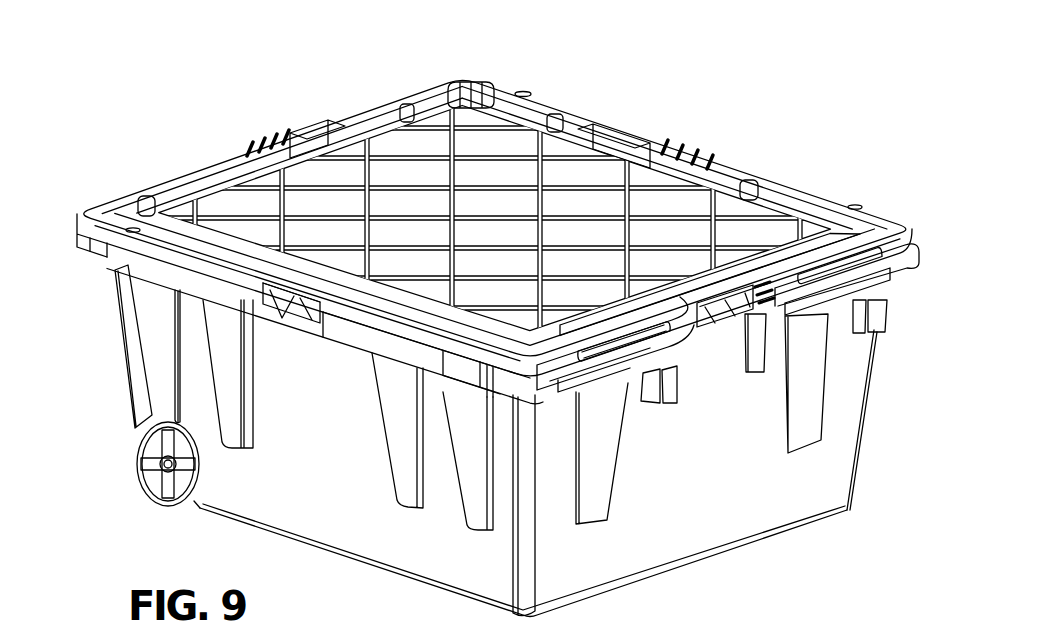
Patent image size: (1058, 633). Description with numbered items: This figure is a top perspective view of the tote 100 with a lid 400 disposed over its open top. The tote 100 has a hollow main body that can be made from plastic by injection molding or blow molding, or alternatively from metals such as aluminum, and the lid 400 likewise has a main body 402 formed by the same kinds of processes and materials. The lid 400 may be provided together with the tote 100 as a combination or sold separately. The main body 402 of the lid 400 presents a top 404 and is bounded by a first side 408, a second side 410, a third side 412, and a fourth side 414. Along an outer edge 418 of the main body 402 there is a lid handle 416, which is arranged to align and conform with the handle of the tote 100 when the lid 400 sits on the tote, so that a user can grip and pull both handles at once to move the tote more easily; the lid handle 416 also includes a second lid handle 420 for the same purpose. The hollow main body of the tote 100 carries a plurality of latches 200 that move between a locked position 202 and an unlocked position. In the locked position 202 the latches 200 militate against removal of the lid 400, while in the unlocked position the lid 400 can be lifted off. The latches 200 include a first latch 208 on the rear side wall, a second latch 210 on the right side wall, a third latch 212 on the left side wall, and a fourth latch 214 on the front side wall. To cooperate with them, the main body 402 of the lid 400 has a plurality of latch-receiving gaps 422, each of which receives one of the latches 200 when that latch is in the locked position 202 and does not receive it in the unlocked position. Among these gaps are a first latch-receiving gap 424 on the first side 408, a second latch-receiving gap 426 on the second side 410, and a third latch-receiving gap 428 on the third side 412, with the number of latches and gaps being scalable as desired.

The tote 100 is at (884, 429).
The plurality of latches 200 is at (492, 244).
The locked position 202 is at (250, 291).
The first latch 208 is at (262, 146).
The second latch 210 is at (690, 158).
The third latch 212 is at (272, 322).
The fourth latch 214 is at (746, 315).
The lid 400 is at (502, 236).
The main body 402 is at (502, 74).
The top 404 is at (571, 178).
The first side 408 is at (383, 103).
The second side 410 is at (765, 182).
The third side 412 is at (872, 245).
The fourth side 414 is at (413, 326).
The lid handle 416 is at (654, 362).
The outer edge 418 is at (904, 243).
The second lid handle 420 is at (887, 272).
The plurality of latch-receiving gaps 422 is at (516, 243).
The first latch-receiving gap 424 is at (310, 152).
The second latch-receiving gap 426 is at (656, 152).
The third latch-receiving gap 428 is at (712, 328).